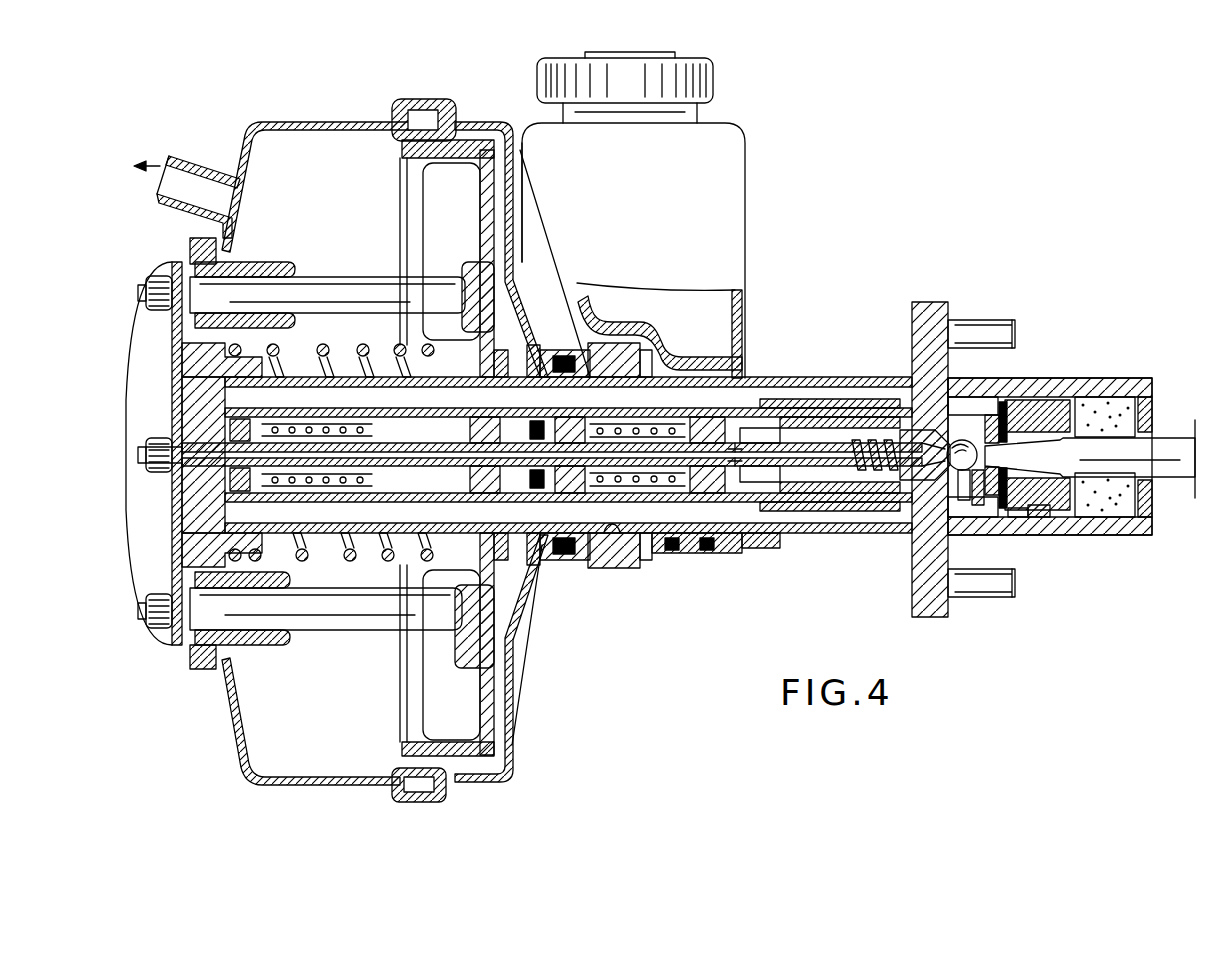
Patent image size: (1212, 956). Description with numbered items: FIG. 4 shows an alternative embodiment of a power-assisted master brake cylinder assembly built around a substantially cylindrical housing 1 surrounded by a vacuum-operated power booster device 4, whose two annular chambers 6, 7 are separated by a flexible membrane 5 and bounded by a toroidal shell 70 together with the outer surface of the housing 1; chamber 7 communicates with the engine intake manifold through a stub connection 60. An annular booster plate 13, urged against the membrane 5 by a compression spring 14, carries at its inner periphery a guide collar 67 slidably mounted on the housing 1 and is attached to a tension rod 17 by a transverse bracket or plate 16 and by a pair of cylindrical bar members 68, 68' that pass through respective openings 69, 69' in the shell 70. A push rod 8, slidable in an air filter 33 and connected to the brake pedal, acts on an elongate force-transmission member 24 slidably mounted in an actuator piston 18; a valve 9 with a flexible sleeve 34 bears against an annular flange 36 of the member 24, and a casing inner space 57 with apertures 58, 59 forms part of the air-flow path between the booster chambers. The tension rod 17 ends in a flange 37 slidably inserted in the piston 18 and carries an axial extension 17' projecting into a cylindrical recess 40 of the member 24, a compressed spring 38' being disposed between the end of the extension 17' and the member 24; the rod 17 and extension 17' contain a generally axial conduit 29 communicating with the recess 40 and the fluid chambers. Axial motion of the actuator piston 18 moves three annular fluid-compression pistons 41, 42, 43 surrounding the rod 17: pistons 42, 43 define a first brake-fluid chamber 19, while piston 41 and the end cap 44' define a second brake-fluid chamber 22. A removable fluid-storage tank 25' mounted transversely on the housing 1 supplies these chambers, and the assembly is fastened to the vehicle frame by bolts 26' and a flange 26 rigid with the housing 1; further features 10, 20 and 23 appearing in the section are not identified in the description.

The housing 1 is at (793, 376).
The power booster device 4 is at (224, 715).
The membrane 5 is at (423, 100).
The annular chamber 6 is at (470, 135).
The annular chamber 7 is at (308, 140).
The push rod 8 is at (1165, 442).
The valve 9 is at (1036, 522).
The retainer 10 is at (1022, 535).
The annular booster plate 13 is at (432, 158).
The compression spring 14 is at (365, 338).
The bracket or plate 16 is at (168, 340).
The tension rod 17 is at (507, 495).
The axial extension 17' is at (830, 489).
The actuator piston 18 is at (825, 385).
The first brake-fluid chamber 19 is at (683, 548).
The port 20 is at (612, 565).
The second brake-fluid chamber 22 is at (320, 478).
The compensating port 23 is at (641, 581).
The force-transmission member 24 is at (937, 470).
The fluid-storage tank 25' is at (663, 215).
The flange 26 is at (943, 436).
The bolts 26' is at (1011, 442).
The conduit 29 is at (542, 567).
The air filter 33 is at (1113, 378).
The flexible sleeve 34 is at (1047, 380).
The annular flange 36 is at (980, 428).
The flange 37 is at (762, 542).
The compressed spring 38' is at (827, 405).
The cylindrical recess 40 is at (873, 432).
The fluid-compression piston 41 is at (403, 412).
The fluid-compression piston 42 is at (542, 383).
The fluid-compression piston 43 is at (682, 385).
The end cap 44' is at (166, 455).
The inner space 57 is at (978, 494).
The aperture 58 is at (1003, 408).
The aperture 59 is at (965, 492).
The stub connection 60 is at (212, 183).
The guide collar 67 is at (408, 362).
The cylindrical bar member 68 is at (326, 631).
The cylindrical bar member 68' is at (327, 276).
The opening 69 is at (172, 661).
The opening 69' is at (183, 238).
The toroidal shell 70 is at (266, 778).